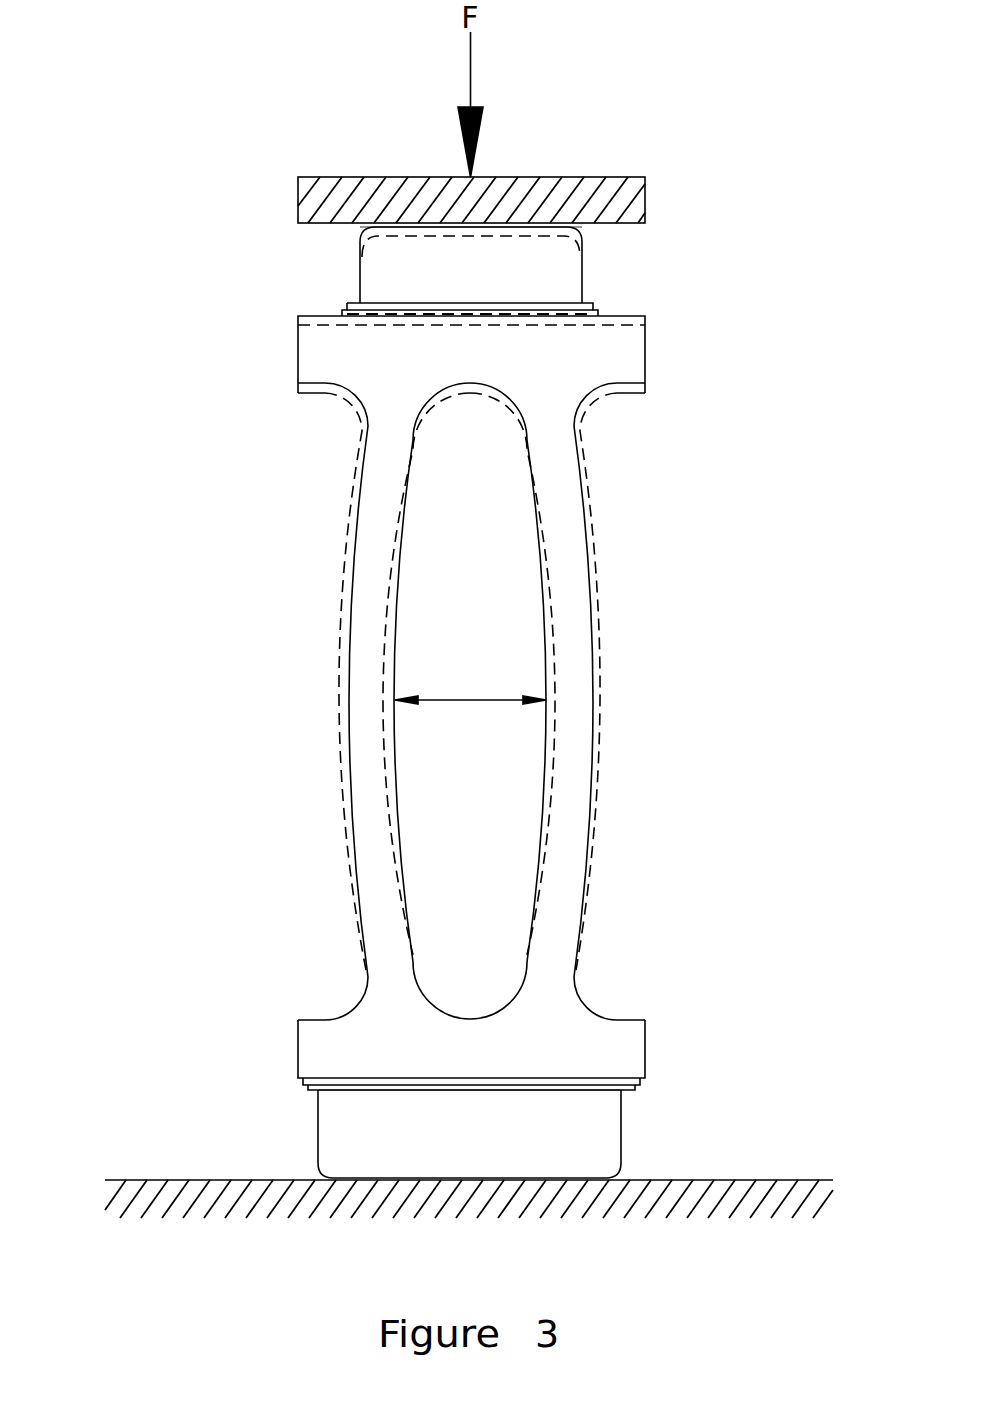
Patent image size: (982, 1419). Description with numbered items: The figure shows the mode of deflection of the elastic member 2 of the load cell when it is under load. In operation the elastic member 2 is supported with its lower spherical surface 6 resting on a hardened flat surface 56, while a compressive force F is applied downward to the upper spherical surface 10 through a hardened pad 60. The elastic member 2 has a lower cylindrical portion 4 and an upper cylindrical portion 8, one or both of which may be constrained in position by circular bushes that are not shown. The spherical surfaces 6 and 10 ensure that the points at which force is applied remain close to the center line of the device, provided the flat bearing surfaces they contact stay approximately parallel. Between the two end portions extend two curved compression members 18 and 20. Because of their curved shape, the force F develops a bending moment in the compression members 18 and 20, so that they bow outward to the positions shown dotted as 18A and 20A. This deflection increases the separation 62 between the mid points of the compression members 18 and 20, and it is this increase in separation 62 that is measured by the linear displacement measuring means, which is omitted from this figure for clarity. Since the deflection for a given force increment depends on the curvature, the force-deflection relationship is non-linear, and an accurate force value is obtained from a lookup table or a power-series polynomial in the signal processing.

The elastic member 2 is at (475, 693).
The cylindrical portion 4 is at (627, 1130).
The spherical surface 6 is at (368, 1173).
The cylindrical portion 8 is at (585, 273).
The spherical surface 10 is at (405, 231).
The compression member 18 is at (342, 648).
The deflected position of compression member 18A is at (333, 700).
The compression member 20 is at (593, 652).
The deflected position of compression member 20A is at (607, 700).
The hardened flat surface 56 is at (183, 1175).
The hardened pad 60 is at (650, 193).
The separation 62 is at (470, 681).